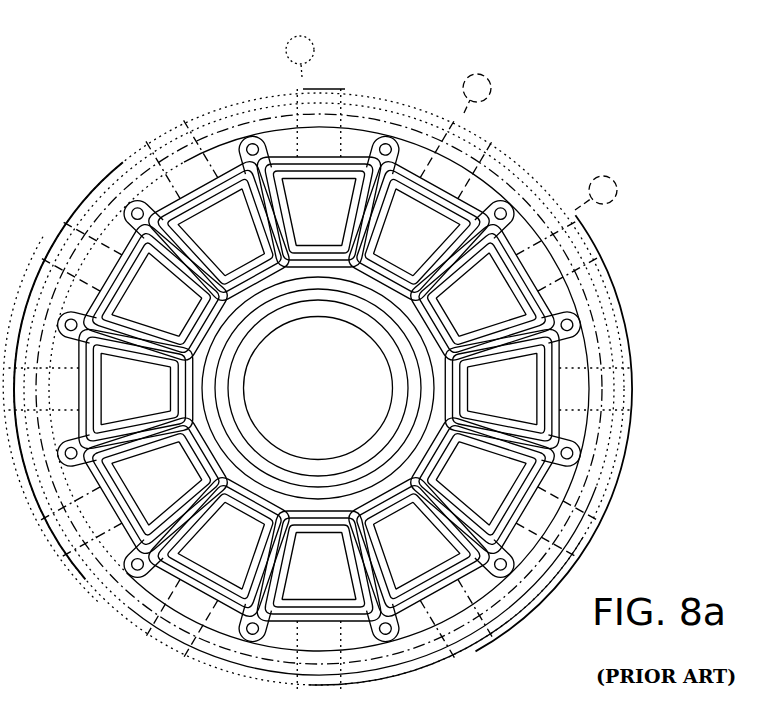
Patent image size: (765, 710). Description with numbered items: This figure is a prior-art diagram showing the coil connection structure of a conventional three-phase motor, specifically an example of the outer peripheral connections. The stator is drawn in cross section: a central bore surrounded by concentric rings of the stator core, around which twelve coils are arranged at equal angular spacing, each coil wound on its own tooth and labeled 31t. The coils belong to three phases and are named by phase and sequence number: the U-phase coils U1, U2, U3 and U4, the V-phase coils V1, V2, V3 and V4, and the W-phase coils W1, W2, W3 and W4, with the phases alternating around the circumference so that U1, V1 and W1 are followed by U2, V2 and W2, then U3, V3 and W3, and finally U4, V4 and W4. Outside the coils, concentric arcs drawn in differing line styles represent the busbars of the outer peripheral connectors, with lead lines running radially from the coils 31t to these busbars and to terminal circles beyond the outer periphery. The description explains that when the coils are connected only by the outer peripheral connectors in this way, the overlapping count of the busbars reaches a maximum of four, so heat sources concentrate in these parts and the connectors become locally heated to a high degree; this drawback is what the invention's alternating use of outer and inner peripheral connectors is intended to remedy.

The stator coil (tooth winding) 31t is at (319, 389).
The U-phase coil 1 U1 is at (319, 212).
The V-phase coil 1 V1 is at (411, 235).
The W-phase coil 1 W1 is at (477, 300).
The U-phase coil 2 U2 is at (502, 388).
The V-phase coil 2 V2 is at (477, 477).
The W-phase coil 2 W2 is at (411, 542).
The U-phase coil 3 U3 is at (319, 566).
The V-phase coil 3 V3 is at (227, 542).
The W-phase coil 3 W3 is at (160, 477).
The U-phase coil 4 U4 is at (136, 388).
The V-phase coil 4 V4 is at (160, 300).
The W-phase coil 4 W4 is at (227, 235).